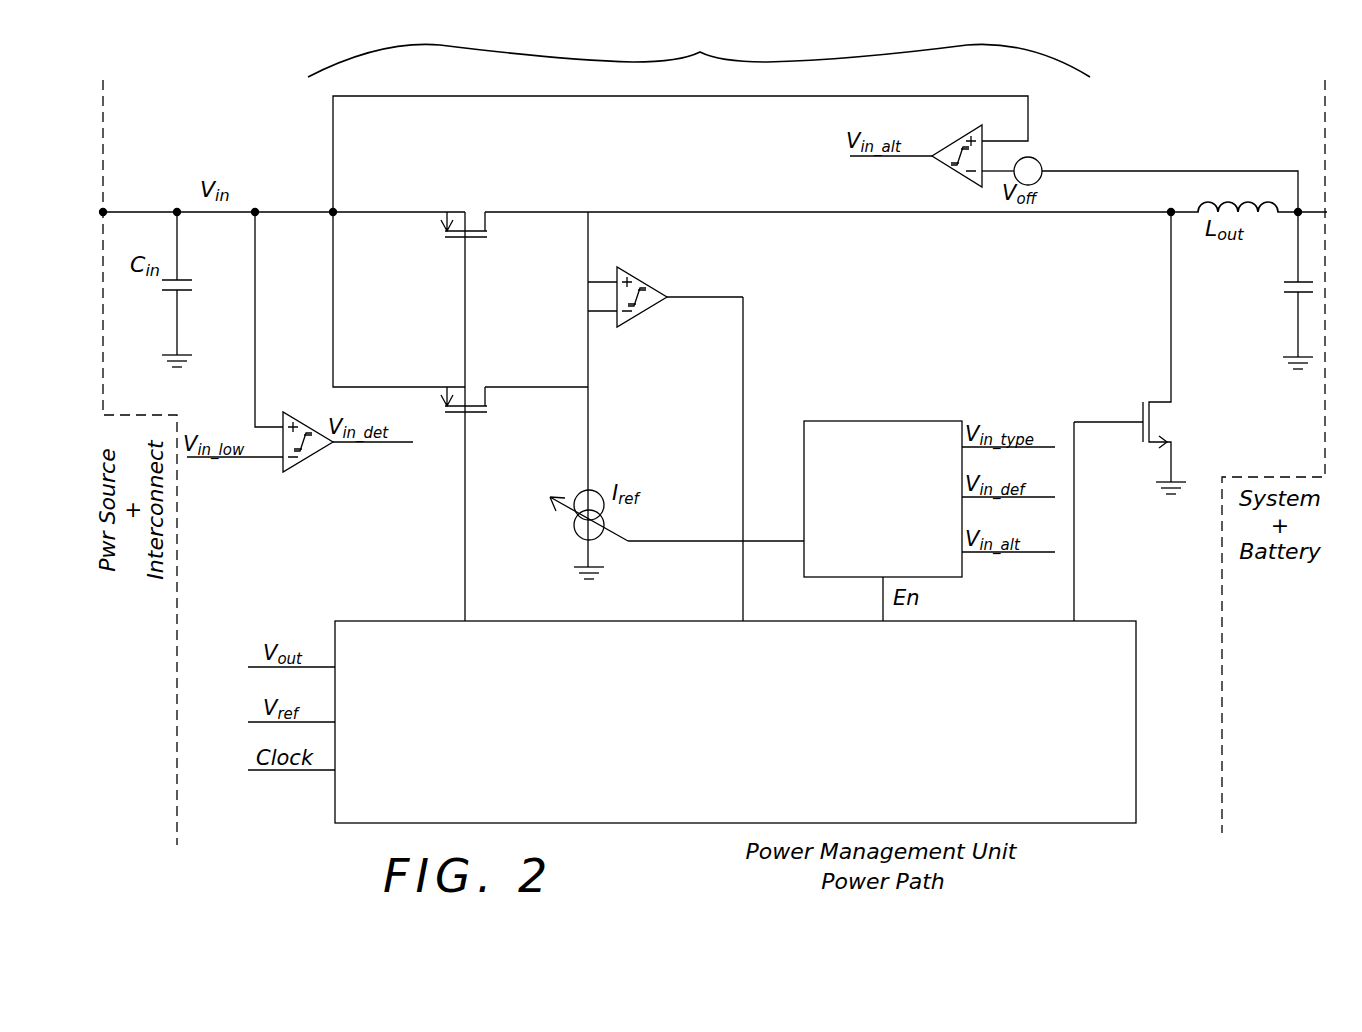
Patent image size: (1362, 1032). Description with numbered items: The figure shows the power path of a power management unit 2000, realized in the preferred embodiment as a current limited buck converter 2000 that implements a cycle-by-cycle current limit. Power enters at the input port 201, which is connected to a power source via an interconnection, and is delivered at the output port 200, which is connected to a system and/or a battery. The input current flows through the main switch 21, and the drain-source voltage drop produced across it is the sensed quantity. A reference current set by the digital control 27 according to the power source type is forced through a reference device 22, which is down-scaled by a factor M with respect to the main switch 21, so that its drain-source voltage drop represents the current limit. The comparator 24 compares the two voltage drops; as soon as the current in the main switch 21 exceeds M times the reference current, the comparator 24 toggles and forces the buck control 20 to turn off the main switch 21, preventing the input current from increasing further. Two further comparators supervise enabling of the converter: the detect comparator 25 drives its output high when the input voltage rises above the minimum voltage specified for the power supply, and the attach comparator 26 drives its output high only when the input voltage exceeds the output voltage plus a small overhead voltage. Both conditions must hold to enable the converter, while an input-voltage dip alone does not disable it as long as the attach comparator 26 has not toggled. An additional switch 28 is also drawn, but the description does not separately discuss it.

The power management unit 2000 is at (699, 51).
The input port 201 is at (104, 211).
The output port 200 is at (1298, 210).
The main switch 21 is at (475, 213).
The reference device 22 is at (475, 388).
The comparator 24 is at (652, 297).
The detect comparator 25 is at (317, 448).
The attach comparator 26 is at (943, 165).
The digital control 27 is at (893, 432).
The low side switch transistor 28 is at (1168, 398).
The buck control 20 is at (1136, 720).